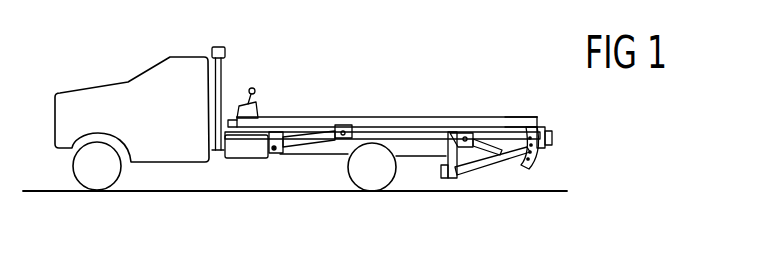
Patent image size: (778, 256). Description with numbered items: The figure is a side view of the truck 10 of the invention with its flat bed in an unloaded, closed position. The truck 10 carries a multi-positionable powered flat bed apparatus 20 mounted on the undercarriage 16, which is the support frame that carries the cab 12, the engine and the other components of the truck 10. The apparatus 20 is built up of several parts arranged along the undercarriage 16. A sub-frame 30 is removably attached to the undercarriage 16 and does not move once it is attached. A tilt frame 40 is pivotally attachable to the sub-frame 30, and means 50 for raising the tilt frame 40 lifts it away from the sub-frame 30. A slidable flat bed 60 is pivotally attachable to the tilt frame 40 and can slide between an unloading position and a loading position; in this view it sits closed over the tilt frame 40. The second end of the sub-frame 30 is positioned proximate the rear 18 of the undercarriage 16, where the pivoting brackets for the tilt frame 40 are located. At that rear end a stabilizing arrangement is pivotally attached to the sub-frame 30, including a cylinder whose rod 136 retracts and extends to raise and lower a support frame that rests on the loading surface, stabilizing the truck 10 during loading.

The truck 10 is at (139, 57).
The cab 12 is at (73, 90).
The undercarriage 16 is at (340, 157).
The rear 18 is at (446, 165).
The multi-positionable powered flat bed apparatus 20 is at (315, 106).
The sub-frame 30 is at (412, 158).
The tilt frame 40 is at (522, 122).
The means for raising the tilt frame 50 is at (293, 163).
The slidable flat bed 60 is at (423, 118).
The rod 136 is at (502, 152).